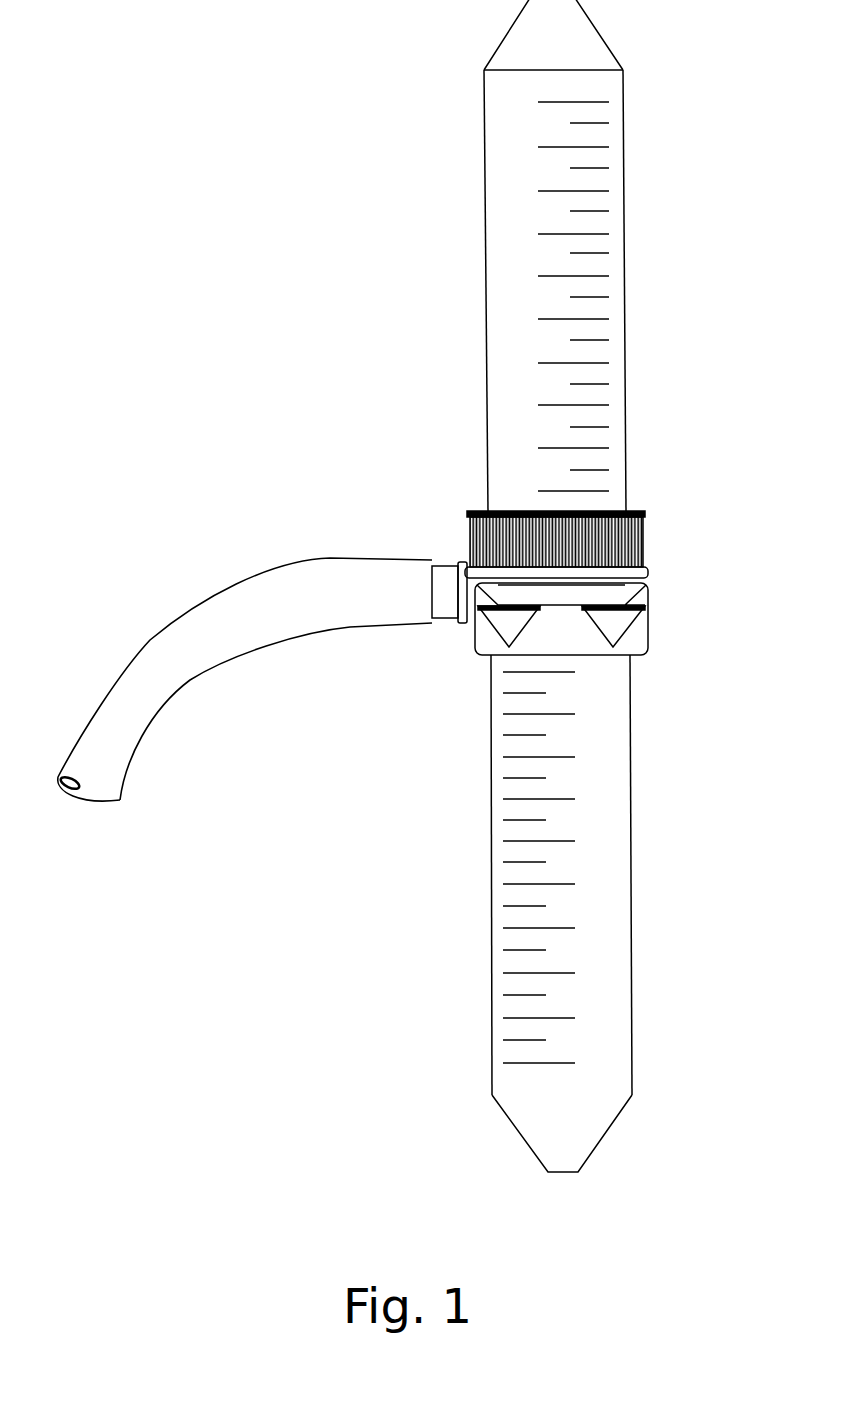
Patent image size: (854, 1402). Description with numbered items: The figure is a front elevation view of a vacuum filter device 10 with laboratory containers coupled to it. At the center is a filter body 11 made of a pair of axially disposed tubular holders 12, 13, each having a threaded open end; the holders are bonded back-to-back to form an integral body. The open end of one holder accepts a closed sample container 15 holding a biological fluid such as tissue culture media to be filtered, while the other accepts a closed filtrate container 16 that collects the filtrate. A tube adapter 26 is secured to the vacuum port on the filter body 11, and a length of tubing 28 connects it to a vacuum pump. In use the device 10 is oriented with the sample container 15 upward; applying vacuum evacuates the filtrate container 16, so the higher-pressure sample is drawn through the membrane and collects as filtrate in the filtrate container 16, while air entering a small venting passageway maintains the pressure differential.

The vacuum filter device 10 is at (340, 377).
The filter body 11 is at (600, 584).
The tubular holder 12 is at (643, 511).
The tubular holder 13 is at (602, 632).
The sample container 15 is at (625, 273).
The filtrate container 16 is at (631, 870).
The tube adapter 26 is at (447, 617).
The tubing 28 is at (223, 653).